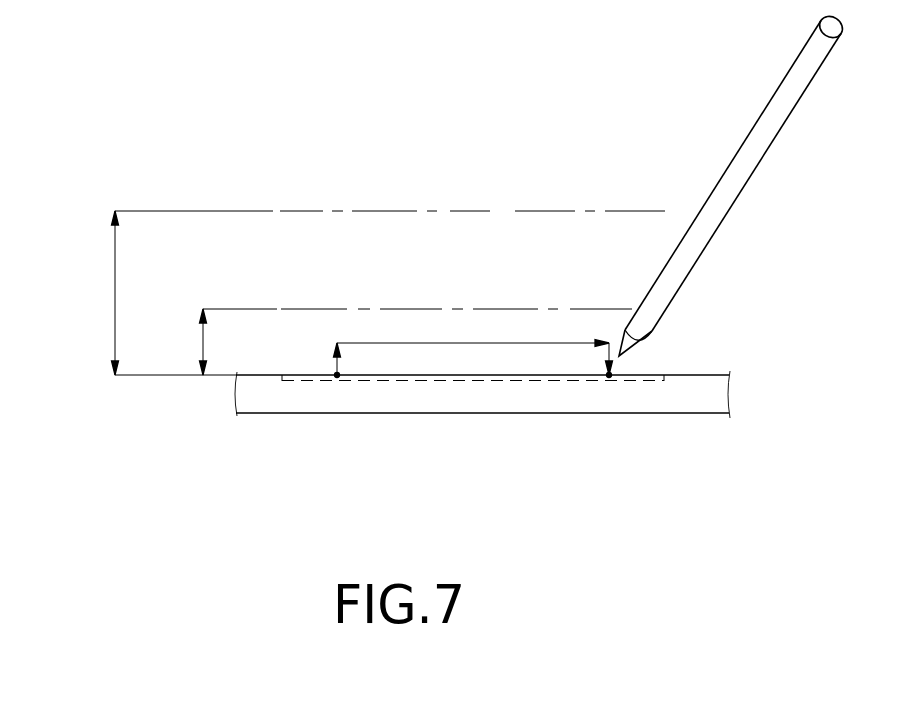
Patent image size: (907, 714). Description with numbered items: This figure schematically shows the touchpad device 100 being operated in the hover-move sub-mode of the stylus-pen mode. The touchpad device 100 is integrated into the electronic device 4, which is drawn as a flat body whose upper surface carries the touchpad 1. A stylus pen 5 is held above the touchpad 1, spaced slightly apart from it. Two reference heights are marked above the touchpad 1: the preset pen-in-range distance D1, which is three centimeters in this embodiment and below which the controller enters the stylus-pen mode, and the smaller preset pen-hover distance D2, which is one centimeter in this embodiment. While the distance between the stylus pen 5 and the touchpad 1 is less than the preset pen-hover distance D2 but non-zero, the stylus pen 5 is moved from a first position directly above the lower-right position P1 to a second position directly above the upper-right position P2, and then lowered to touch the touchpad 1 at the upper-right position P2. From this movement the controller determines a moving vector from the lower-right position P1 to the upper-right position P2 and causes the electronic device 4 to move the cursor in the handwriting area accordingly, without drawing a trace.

The stylus pen 5 is at (790, 125).
The touchpad device 100 is at (665, 364).
The electronic device 4 is at (293, 418).
The touchpad 1 is at (530, 396).
The lower-right position P1 is at (337, 375).
The upper-right position P2 is at (609, 375).
The preset pen-in-range distance D1 is at (365, 293).
The preset pen-hover distance D2 is at (392, 342).